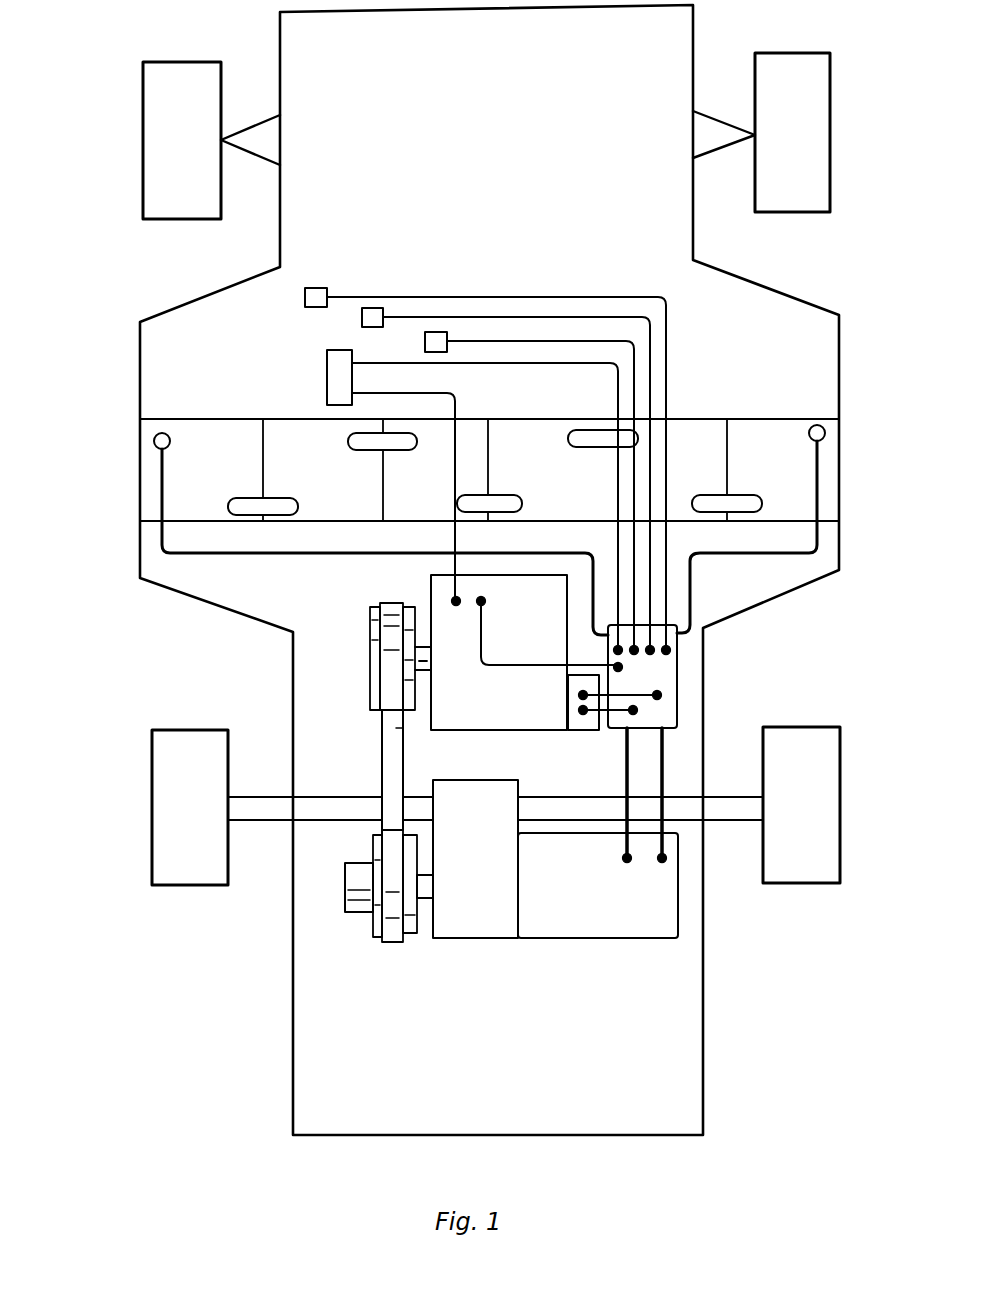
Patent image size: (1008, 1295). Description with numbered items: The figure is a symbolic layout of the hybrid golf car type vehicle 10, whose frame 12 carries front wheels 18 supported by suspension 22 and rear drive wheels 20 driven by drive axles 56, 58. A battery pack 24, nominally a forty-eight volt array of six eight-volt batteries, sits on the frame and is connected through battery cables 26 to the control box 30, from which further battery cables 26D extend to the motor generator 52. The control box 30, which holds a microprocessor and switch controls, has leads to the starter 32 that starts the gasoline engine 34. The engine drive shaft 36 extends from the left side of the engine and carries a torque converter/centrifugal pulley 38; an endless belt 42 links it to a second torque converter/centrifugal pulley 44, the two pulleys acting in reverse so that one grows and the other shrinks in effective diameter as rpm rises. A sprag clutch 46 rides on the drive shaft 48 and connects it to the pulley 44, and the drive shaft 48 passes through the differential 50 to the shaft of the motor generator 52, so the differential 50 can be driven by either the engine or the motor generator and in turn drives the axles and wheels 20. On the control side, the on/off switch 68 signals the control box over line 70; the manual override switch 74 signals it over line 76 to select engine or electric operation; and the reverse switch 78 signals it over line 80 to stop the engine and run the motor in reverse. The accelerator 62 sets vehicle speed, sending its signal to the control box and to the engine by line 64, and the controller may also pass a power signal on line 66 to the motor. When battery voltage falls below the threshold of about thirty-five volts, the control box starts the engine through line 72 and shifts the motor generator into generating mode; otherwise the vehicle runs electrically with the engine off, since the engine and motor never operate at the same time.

The hybrid golf car type vehicle 10 is at (90, 258).
The frame 12 is at (832, 353).
The front wheels 18 is at (178, 62).
The rear drive wheels 20 is at (190, 886).
The suspension 22 is at (258, 155).
The battery pack 24 is at (832, 467).
The battery cables 26 is at (162, 505).
The battery cables 26D is at (662, 805).
The control box 30 is at (680, 675).
The starter 32 is at (583, 730).
The gasoline engine 34 is at (499, 652).
The engine drive shaft 36 is at (421, 670).
The torque converter/centrifugal pulley 38 is at (370, 640).
The endless belt 42 is at (380, 760).
The second torque converter/centrifugal pulley 44 is at (373, 848).
The sprag clutch 46 is at (345, 905).
The drive shaft 48 is at (424, 898).
The differential 50 is at (475, 859).
The motor generator 52 is at (598, 885).
The drive axle 56 is at (267, 822).
The right axle 58 is at (740, 822).
The accelerator 62 is at (327, 377).
The line 64 is at (458, 408).
The signal line 66 is at (544, 365).
The on/off switch 68 is at (305, 297).
The line 70 is at (416, 296).
The line 72 is at (535, 665).
The manual override switch 74 is at (362, 318).
The line 76 is at (475, 316).
The reverse switch 78 is at (425, 343).
The line 80 is at (543, 340).